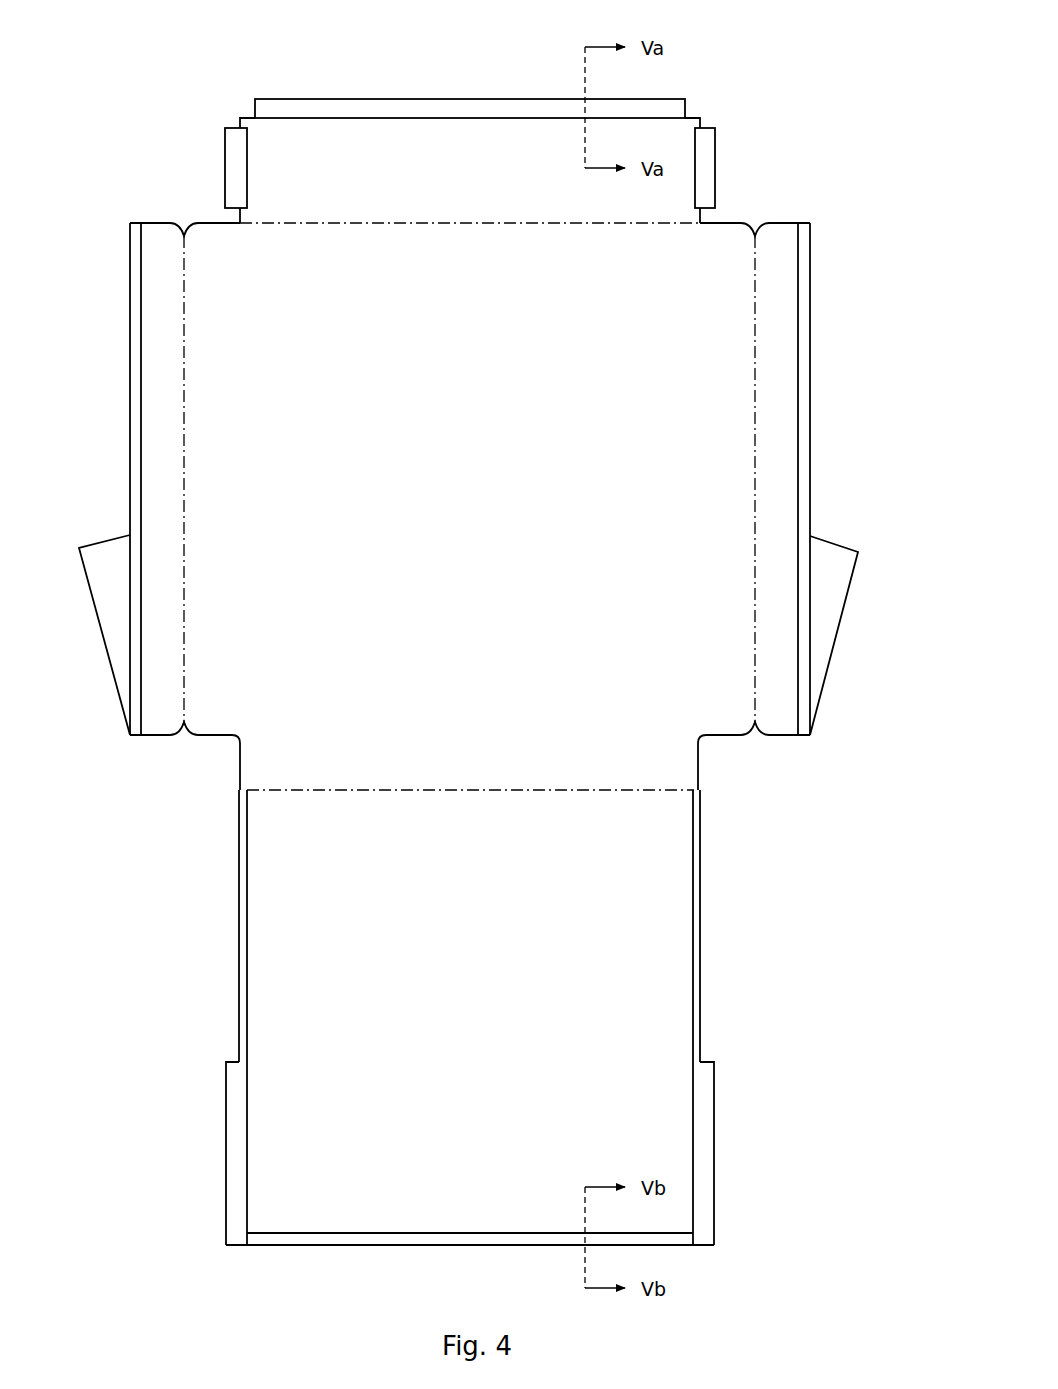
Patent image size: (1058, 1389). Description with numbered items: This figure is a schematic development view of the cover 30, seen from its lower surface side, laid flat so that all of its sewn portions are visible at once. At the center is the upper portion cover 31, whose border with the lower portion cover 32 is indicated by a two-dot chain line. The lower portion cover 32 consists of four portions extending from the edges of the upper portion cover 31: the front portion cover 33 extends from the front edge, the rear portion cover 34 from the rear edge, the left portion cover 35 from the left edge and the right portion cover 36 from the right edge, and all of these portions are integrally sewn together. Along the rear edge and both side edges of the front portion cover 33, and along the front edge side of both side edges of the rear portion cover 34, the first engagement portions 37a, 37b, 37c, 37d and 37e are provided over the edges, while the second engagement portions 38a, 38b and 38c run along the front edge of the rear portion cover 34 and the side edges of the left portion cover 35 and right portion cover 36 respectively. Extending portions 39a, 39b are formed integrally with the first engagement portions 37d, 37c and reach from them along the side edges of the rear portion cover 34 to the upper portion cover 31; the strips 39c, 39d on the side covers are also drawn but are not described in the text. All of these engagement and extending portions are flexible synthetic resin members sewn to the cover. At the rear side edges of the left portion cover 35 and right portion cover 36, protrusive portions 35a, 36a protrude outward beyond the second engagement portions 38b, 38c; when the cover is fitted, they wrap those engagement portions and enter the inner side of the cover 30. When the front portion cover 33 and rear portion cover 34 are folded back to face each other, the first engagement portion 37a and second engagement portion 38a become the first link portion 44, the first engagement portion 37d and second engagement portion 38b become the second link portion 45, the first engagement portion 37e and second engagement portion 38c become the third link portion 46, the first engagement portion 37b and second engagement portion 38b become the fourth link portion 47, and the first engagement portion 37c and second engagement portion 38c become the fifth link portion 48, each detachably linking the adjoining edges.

The cover 30 is at (803, 93).
The upper portion cover 31 is at (723, 708).
The lower portion cover 32 is at (745, 1152).
The front portion cover 33 is at (383, 142).
The rear portion cover 34 is at (457, 1222).
The left portion cover 35 is at (765, 408).
The protrusive portion 35a is at (835, 594).
The right portion cover 36 is at (172, 408).
The protrusive portion 36a is at (110, 588).
The first engagement portion 37a is at (467, 107).
The first engagement portion 37b is at (705, 195).
The first engagement portion 37c is at (240, 186).
The first engagement portion 37d is at (705, 1098).
The first engagement portion 37e is at (232, 1098).
The second engagement portion 38a is at (498, 1240).
The second engagement portion 38b is at (805, 305).
The second engagement portion 38c is at (138, 305).
The extending portion 39a is at (697, 868).
The extending portion 39b is at (243, 868).
The right side fold strip 39c is at (805, 676).
The left side fold strip 39d is at (135, 663).
The first link portion 44 is at (672, 80).
The second link portion 45 is at (728, 1058).
The third link portion 46 is at (198, 1060).
The fourth link portion 47 is at (722, 163).
The fifth link portion 48 is at (208, 138).